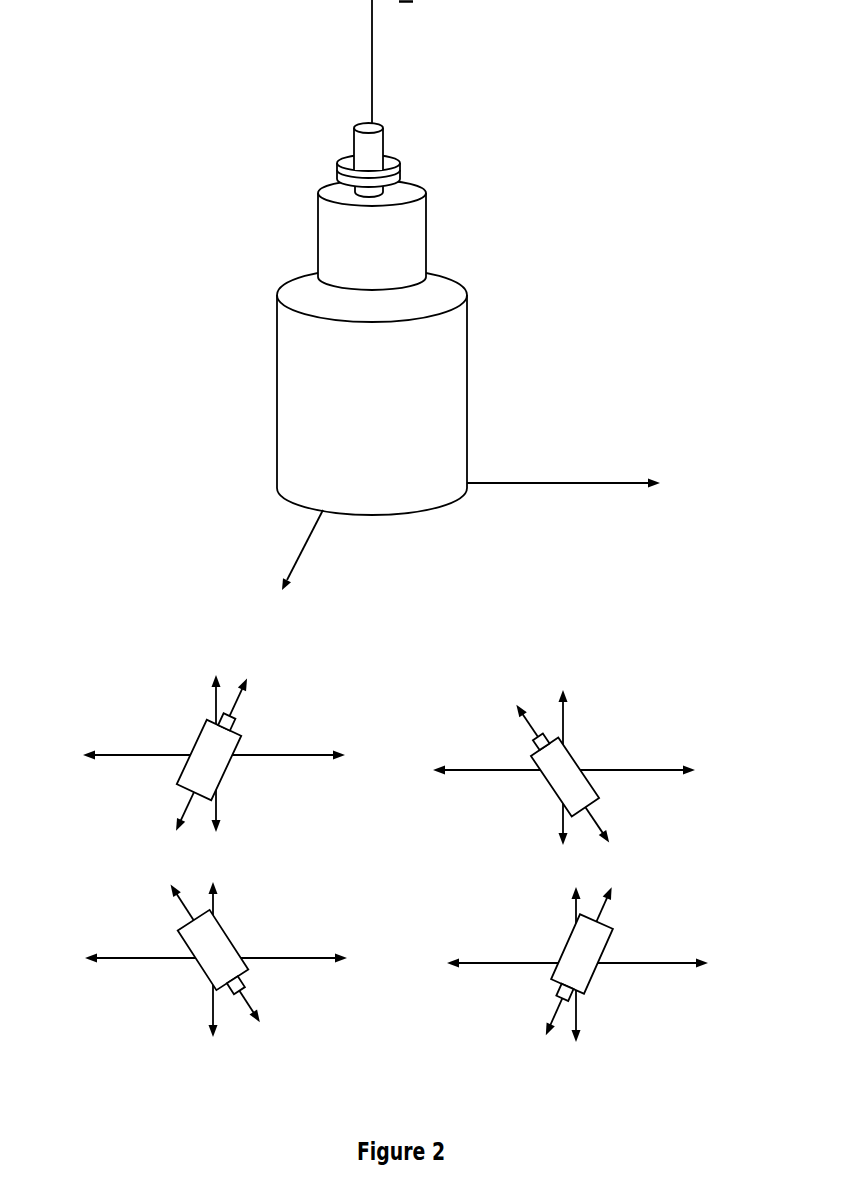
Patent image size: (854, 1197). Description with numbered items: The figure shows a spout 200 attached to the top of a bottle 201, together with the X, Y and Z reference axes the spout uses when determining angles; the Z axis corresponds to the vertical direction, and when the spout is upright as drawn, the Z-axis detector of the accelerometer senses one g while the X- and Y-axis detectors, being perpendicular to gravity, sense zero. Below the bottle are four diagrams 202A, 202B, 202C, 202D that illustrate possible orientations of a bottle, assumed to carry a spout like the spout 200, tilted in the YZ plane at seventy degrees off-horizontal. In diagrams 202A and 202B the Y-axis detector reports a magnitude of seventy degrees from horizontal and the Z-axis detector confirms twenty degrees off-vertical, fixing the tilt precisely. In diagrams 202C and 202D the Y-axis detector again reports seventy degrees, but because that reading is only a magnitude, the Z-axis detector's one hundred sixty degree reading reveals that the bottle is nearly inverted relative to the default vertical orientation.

The spout 200 is at (316, 168).
The bottle 201 is at (255, 401).
The diagram 202A is at (120, 706).
The diagram 202B is at (611, 717).
The diagram 202C is at (121, 924).
The diagram 202D is at (482, 930).